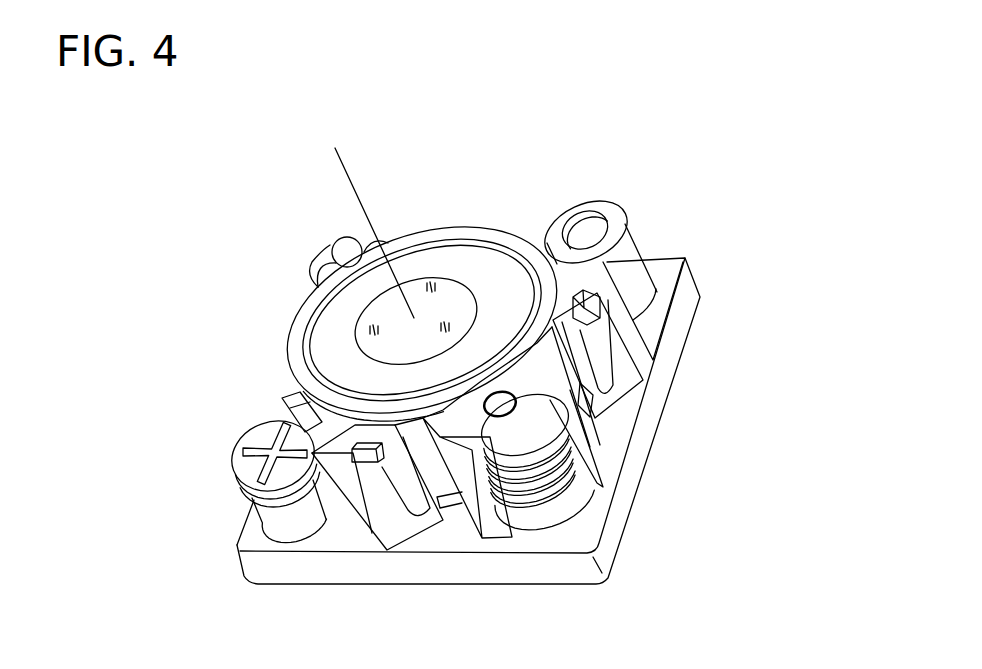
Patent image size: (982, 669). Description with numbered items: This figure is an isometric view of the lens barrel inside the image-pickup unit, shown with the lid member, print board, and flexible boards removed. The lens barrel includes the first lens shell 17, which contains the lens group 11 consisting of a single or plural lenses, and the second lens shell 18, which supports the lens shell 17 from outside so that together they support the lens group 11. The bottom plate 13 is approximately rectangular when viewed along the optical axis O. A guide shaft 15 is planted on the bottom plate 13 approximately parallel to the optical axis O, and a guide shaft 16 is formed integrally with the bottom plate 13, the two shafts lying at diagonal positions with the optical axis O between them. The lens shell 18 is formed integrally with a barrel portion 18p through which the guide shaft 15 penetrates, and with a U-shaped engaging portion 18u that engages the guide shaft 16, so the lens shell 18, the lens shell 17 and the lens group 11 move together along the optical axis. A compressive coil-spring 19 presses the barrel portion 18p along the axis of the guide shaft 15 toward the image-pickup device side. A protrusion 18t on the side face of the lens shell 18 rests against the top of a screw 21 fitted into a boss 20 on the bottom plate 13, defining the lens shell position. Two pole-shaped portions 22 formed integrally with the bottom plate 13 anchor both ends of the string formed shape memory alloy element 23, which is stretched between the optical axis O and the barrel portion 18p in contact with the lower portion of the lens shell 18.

The lens group 11 is at (436, 280).
The bottom plate 13 is at (677, 263).
The guide shaft 15 is at (620, 472).
The guide shaft 16 is at (345, 250).
The first lens shell 17 is at (487, 265).
The second lens shell 18 is at (302, 330).
The engaging portion 18u is at (373, 244).
The protrusion 18t is at (300, 417).
The barrel portion 18p is at (557, 503).
The compressive coil-spring 19 is at (522, 467).
The boss 20 is at (273, 520).
The screw 21 is at (250, 465).
The pole-shaped portion 22 is at (605, 290).
The string formed shape memory alloy element 23 is at (585, 428).
The optical axis O is at (343, 158).